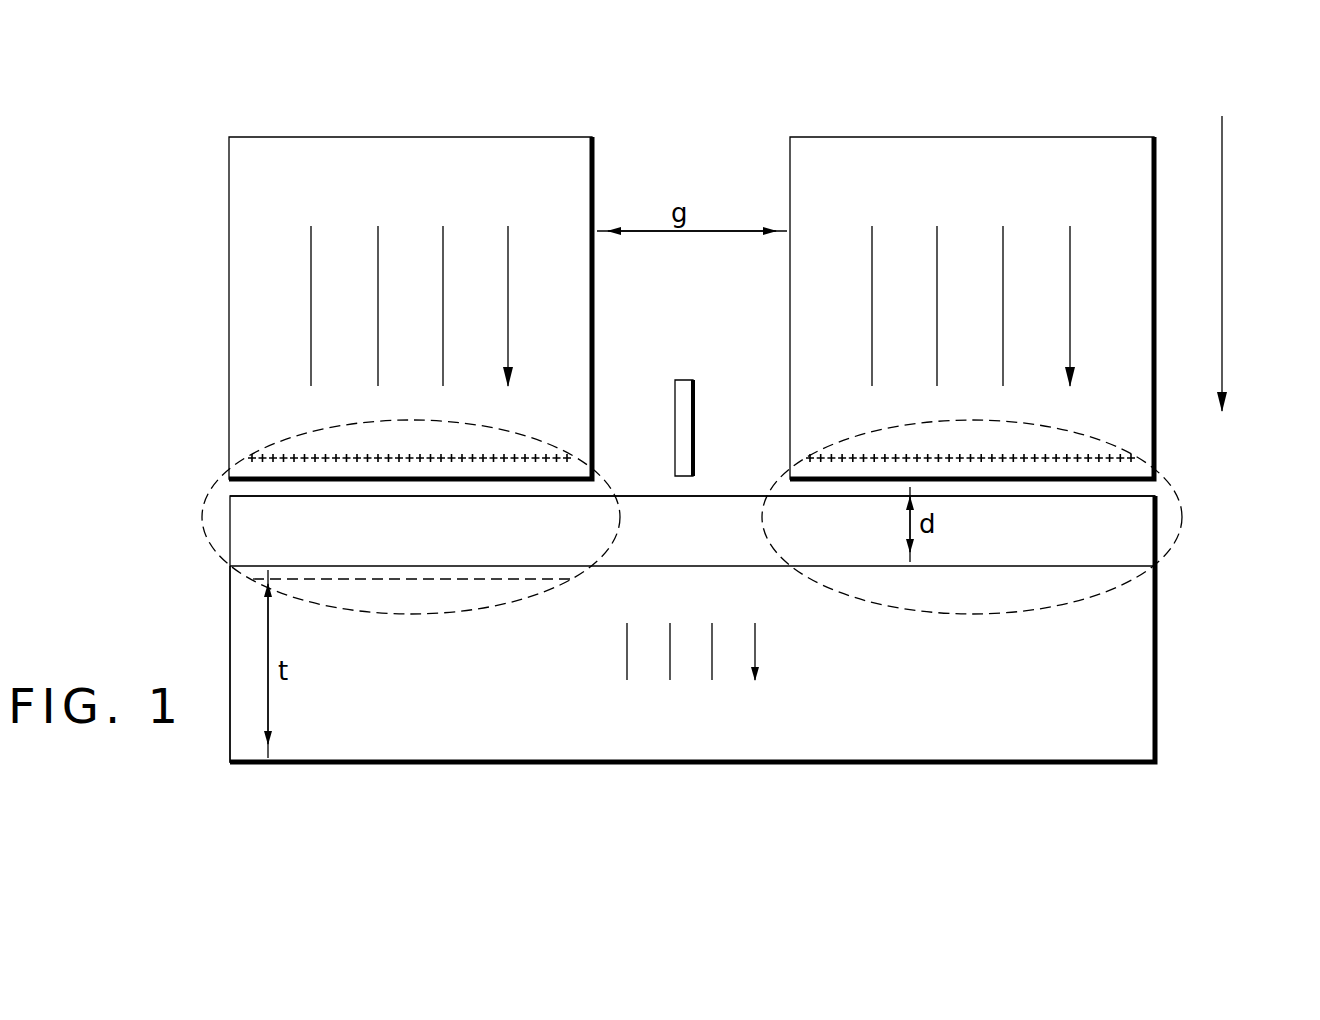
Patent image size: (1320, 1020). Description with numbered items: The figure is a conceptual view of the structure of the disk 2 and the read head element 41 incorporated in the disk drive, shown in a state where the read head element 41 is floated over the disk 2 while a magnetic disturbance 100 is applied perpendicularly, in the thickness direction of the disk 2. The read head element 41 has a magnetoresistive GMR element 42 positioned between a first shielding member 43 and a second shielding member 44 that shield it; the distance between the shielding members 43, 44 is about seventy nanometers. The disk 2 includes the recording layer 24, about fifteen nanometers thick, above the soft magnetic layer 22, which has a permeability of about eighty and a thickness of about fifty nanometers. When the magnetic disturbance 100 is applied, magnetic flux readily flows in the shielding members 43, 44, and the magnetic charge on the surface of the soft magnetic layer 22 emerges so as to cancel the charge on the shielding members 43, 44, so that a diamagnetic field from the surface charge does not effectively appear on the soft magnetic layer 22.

The disk 2 is at (1162, 771).
The soft magnetic layer 22 is at (929, 748).
The recording layer 24 is at (1140, 528).
The read head element 41 is at (691, 248).
The GMR element 42 is at (693, 440).
The first shielding member 43 is at (408, 137).
The second shielding member 44 is at (972, 137).
The magnetic disturbance 100 is at (1222, 307).